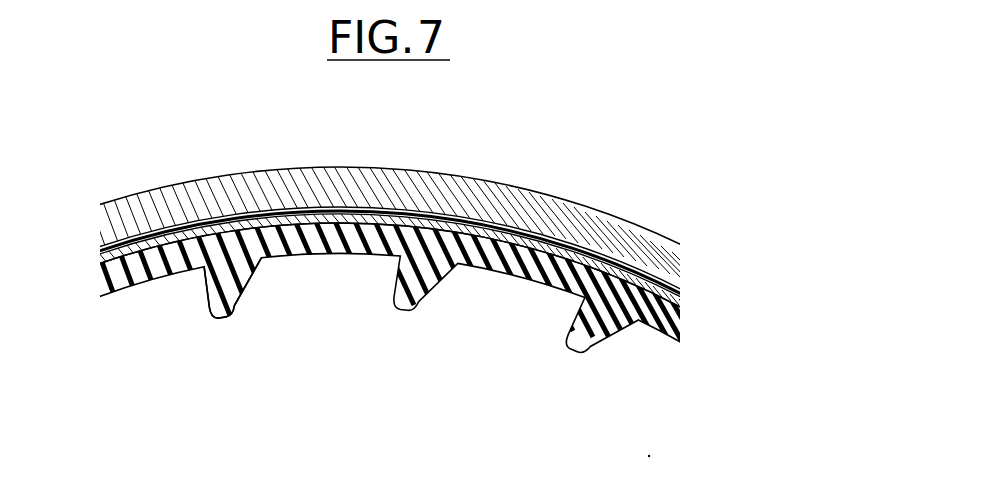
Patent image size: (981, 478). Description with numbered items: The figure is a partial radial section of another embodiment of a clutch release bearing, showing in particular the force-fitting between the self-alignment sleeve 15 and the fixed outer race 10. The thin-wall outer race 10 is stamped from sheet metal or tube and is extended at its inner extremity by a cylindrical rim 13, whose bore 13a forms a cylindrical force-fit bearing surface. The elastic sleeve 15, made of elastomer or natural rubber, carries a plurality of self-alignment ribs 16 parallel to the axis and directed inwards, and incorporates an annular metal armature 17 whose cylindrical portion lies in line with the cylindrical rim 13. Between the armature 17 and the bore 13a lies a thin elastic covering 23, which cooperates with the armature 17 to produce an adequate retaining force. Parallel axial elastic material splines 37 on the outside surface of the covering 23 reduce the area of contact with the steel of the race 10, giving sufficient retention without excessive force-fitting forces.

The outer race 10 is at (217, 177).
The cylindrical rim 13 is at (143, 210).
The bore of the cylindrical rim 13a is at (512, 217).
The self-alignment sleeve 15 is at (133, 288).
The self-alignment ribs 16 is at (218, 306).
The annular metal armature 17 is at (305, 222).
The elastic covering 23 is at (333, 218).
The axial elastic material splines 37 is at (388, 212).